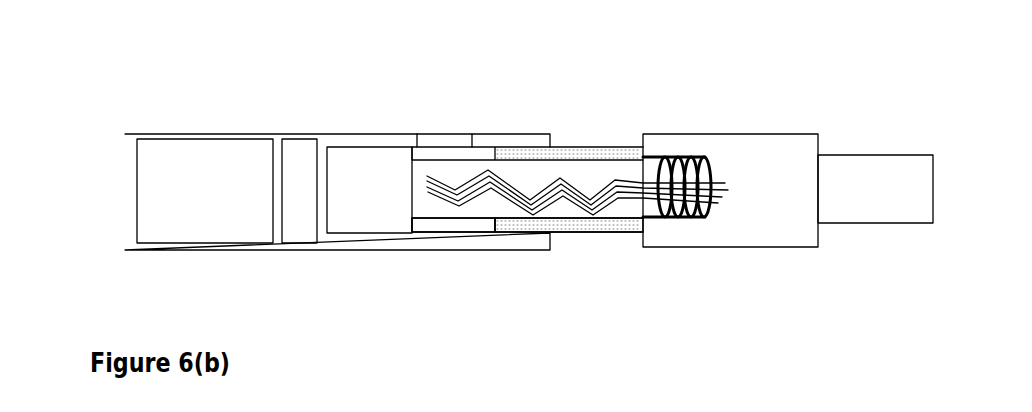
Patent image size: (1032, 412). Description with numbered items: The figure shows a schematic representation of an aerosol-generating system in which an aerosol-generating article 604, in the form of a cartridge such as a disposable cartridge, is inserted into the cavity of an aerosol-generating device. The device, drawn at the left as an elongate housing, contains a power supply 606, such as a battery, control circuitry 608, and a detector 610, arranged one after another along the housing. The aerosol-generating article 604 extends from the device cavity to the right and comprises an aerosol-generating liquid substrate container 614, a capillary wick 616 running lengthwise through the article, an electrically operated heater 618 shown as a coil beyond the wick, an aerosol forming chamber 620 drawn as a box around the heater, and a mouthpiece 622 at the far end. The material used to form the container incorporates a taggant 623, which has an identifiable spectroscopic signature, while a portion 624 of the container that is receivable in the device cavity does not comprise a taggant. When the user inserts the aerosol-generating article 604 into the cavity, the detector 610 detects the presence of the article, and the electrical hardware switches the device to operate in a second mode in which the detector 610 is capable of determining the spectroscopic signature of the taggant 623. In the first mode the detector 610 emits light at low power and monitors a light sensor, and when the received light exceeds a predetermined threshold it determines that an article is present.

The aerosol-generating article 604 is at (795, 92).
The power supply 606 is at (163, 168).
The control circuitry 608 is at (296, 168).
The detector 610 is at (447, 143).
The aerosol-generating liquid substrate container 614 is at (605, 163).
The capillary wick 616 is at (560, 187).
The electrically operated heater 618 is at (690, 160).
The aerosol forming chamber 620 is at (777, 210).
The mouthpiece 622 is at (847, 180).
The taggant 623 is at (590, 225).
The portion of the container 624 is at (433, 223).